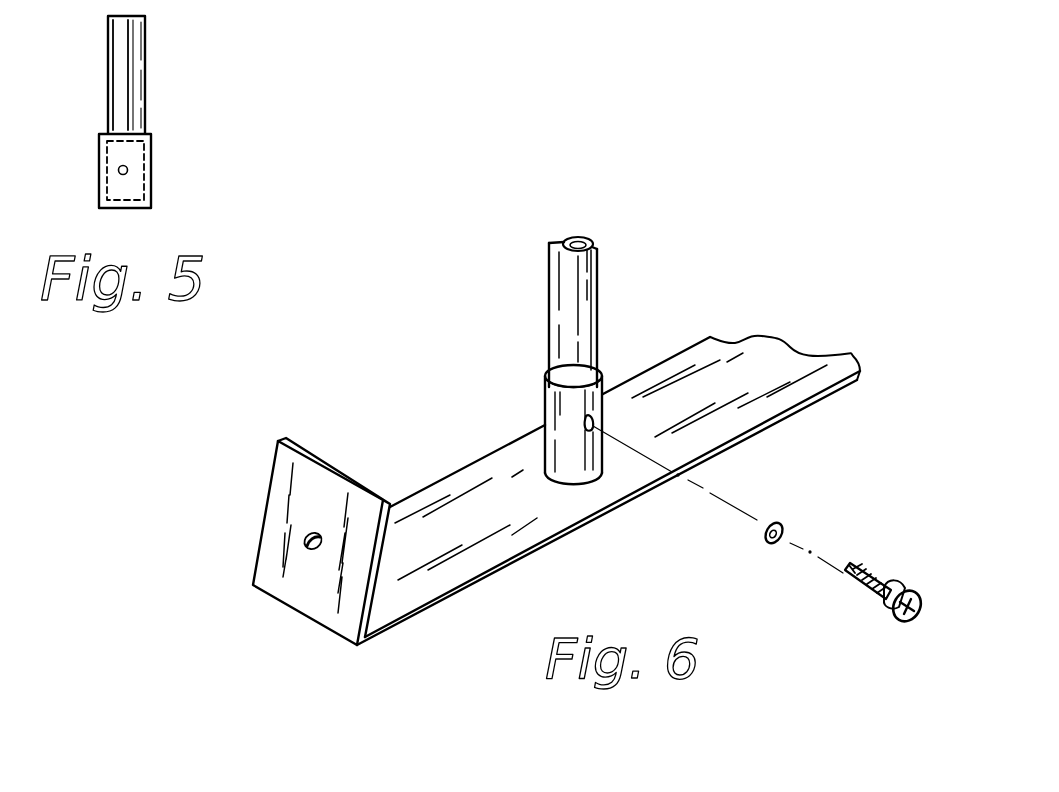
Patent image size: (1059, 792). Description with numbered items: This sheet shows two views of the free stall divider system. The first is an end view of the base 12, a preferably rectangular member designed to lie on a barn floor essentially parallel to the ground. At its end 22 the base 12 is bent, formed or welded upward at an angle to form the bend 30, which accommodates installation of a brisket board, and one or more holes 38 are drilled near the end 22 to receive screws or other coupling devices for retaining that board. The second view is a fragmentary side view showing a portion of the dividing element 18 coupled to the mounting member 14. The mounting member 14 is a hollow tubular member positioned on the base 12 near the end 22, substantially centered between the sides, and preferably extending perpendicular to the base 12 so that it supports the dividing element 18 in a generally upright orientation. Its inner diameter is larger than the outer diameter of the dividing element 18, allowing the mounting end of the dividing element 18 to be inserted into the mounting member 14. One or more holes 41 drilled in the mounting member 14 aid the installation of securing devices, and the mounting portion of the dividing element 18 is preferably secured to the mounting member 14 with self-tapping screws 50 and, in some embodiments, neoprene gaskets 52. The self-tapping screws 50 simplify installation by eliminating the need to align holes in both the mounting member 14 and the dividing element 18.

In FIG. 6, the base 12 is at (431, 468).
In FIG. 6, the mounting member 14 is at (546, 405).
In FIG. 6, the dividing element 18 is at (597, 272).
In FIG. 5, the end 22 is at (145, 132).
In FIG. 5, the bend 30 is at (130, 208).
In FIG. 5, the hole 38 is at (128, 170).
In FIG. 6, the hole 41 is at (591, 416).
In FIG. 6, the self-tapping screw 50 is at (868, 578).
In FIG. 6, the neoprene gasket 52 is at (810, 473).